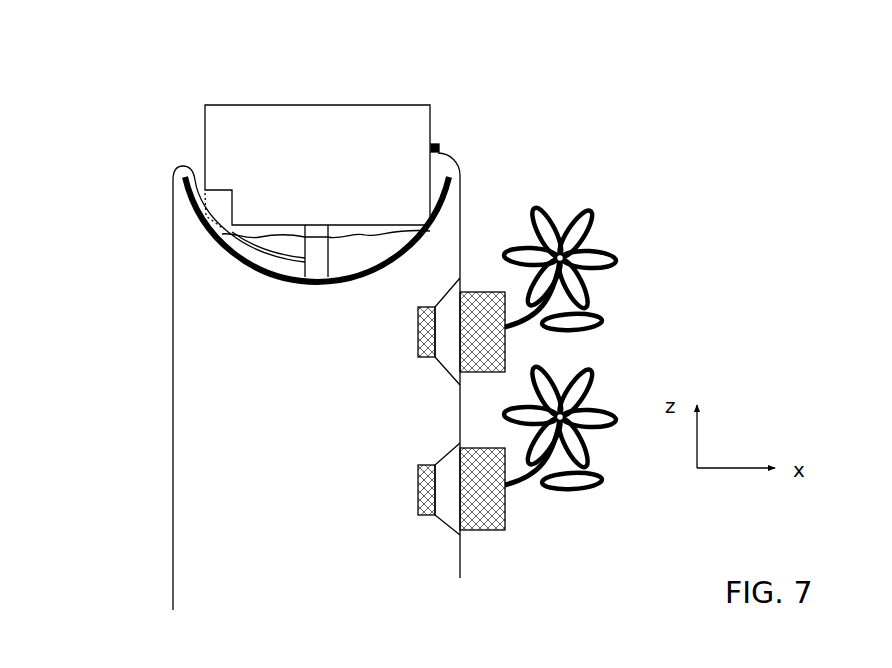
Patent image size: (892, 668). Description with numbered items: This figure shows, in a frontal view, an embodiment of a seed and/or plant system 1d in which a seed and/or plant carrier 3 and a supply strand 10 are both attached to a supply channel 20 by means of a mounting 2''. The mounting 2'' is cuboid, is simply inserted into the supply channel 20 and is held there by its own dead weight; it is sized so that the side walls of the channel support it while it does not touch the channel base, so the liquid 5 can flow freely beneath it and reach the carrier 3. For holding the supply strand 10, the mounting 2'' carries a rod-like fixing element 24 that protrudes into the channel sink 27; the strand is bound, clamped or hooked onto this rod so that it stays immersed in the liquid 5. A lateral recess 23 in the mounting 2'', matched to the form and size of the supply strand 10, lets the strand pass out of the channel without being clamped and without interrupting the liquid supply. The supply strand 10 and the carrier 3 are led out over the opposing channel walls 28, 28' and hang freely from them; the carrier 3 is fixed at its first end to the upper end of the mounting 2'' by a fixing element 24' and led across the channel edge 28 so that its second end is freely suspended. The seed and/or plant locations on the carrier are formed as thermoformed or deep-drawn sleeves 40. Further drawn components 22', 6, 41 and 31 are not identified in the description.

The seed and/or plant system 1d is at (520, 67).
The mounting 2'' is at (447, 152).
The fixing element 24' is at (600, 127).
The channel wall 28 is at (584, 157).
The channel wall 28' is at (180, 193).
The supply channel 20 is at (453, 192).
The lateral recess 23 is at (223, 207).
The liquid 5 is at (327, 247).
The rod-like fixing element 24 is at (193, 282).
The channel 22' is at (201, 302).
The channel sink 27 is at (352, 262).
The supply strand 10 is at (173, 493).
The seed and/or plant carrier 3 is at (461, 558).
The fan 6 is at (493, 352).
The plant 41 is at (590, 260).
The sleeves 40 is at (558, 471).
The fan motor 31 is at (432, 498).